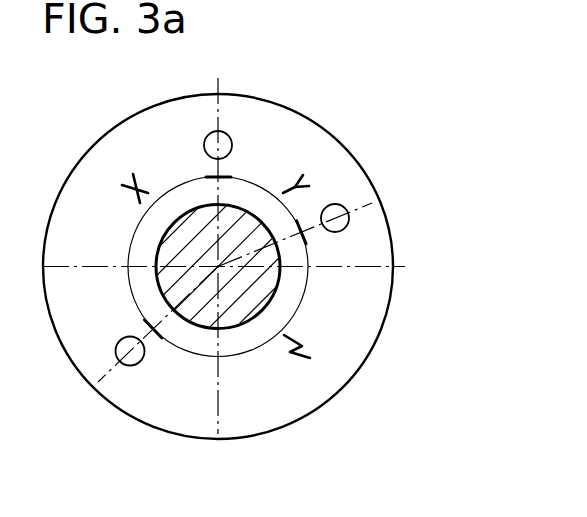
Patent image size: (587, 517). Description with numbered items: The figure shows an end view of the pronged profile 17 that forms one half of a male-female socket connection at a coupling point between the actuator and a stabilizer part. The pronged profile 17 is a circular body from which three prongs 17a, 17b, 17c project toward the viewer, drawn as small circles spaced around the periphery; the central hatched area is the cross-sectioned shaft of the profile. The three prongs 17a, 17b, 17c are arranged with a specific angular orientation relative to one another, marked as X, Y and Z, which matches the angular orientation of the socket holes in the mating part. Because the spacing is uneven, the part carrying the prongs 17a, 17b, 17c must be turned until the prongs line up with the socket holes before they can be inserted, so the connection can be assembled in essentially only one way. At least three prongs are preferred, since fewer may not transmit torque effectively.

The pronged profile 17 is at (434, 176).
The prong 17a is at (231, 143).
The prong 17b is at (336, 232).
The prong 17c is at (140, 365).